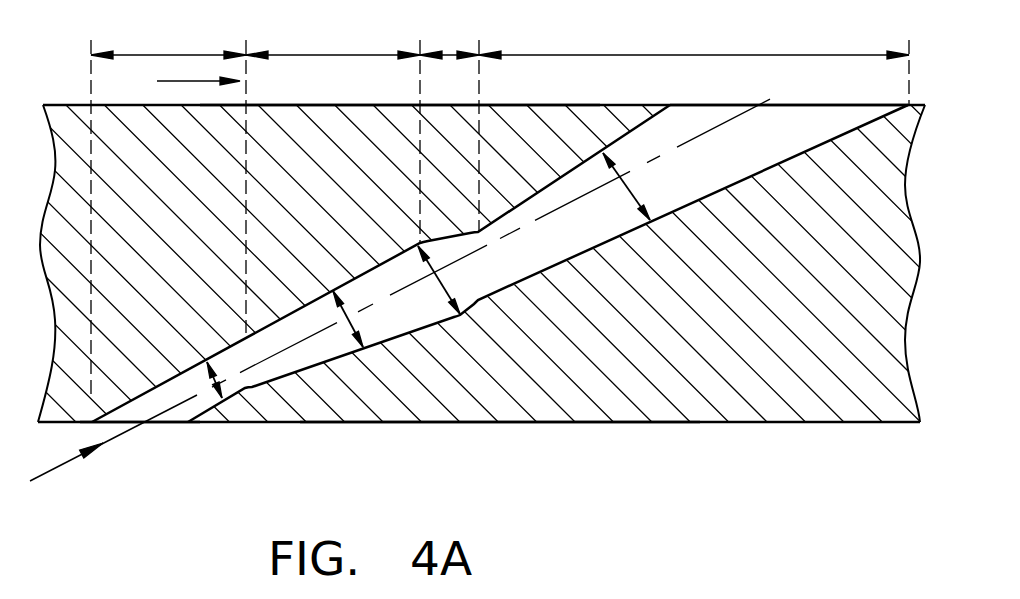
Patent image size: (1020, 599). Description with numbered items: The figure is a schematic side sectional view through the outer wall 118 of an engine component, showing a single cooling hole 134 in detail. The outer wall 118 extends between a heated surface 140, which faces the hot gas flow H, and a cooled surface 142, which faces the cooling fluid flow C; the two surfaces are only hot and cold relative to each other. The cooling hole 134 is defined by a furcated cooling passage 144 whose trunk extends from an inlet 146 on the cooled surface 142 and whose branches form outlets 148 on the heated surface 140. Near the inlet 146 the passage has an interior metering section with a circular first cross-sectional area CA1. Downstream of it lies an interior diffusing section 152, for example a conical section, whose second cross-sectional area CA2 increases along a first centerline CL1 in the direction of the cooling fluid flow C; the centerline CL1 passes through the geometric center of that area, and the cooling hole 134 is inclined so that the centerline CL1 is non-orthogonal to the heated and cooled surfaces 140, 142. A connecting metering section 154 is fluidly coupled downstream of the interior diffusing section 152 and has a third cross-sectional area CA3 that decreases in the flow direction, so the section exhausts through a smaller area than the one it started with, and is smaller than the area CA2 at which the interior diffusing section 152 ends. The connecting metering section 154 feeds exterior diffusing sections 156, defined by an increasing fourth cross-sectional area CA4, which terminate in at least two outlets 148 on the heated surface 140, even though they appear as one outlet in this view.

The outer wall 118 is at (783, 311).
The cooling hole 134 is at (542, 243).
The heated surface 140 is at (287, 105).
The cooled surface 142 is at (487, 422).
The furcated cooling passage 144 is at (385, 268).
The inlet 146 is at (160, 423).
The outlets 148 is at (773, 101).
The interior diffusing section 152 is at (147, 55).
The connecting metering section 154 is at (450, 52).
The exterior diffusing sections 156 is at (682, 55).
The hot gas flow H is at (186, 77).
The cooling fluid flow C is at (48, 476).
The first centerline CL1 is at (293, 345).
The first cross-sectional area CA1 is at (202, 387).
The second cross-sectional area CA2 is at (350, 322).
The third cross-sectional area CA3 is at (448, 286).
The fourth cross-sectional area CA4 is at (630, 200).